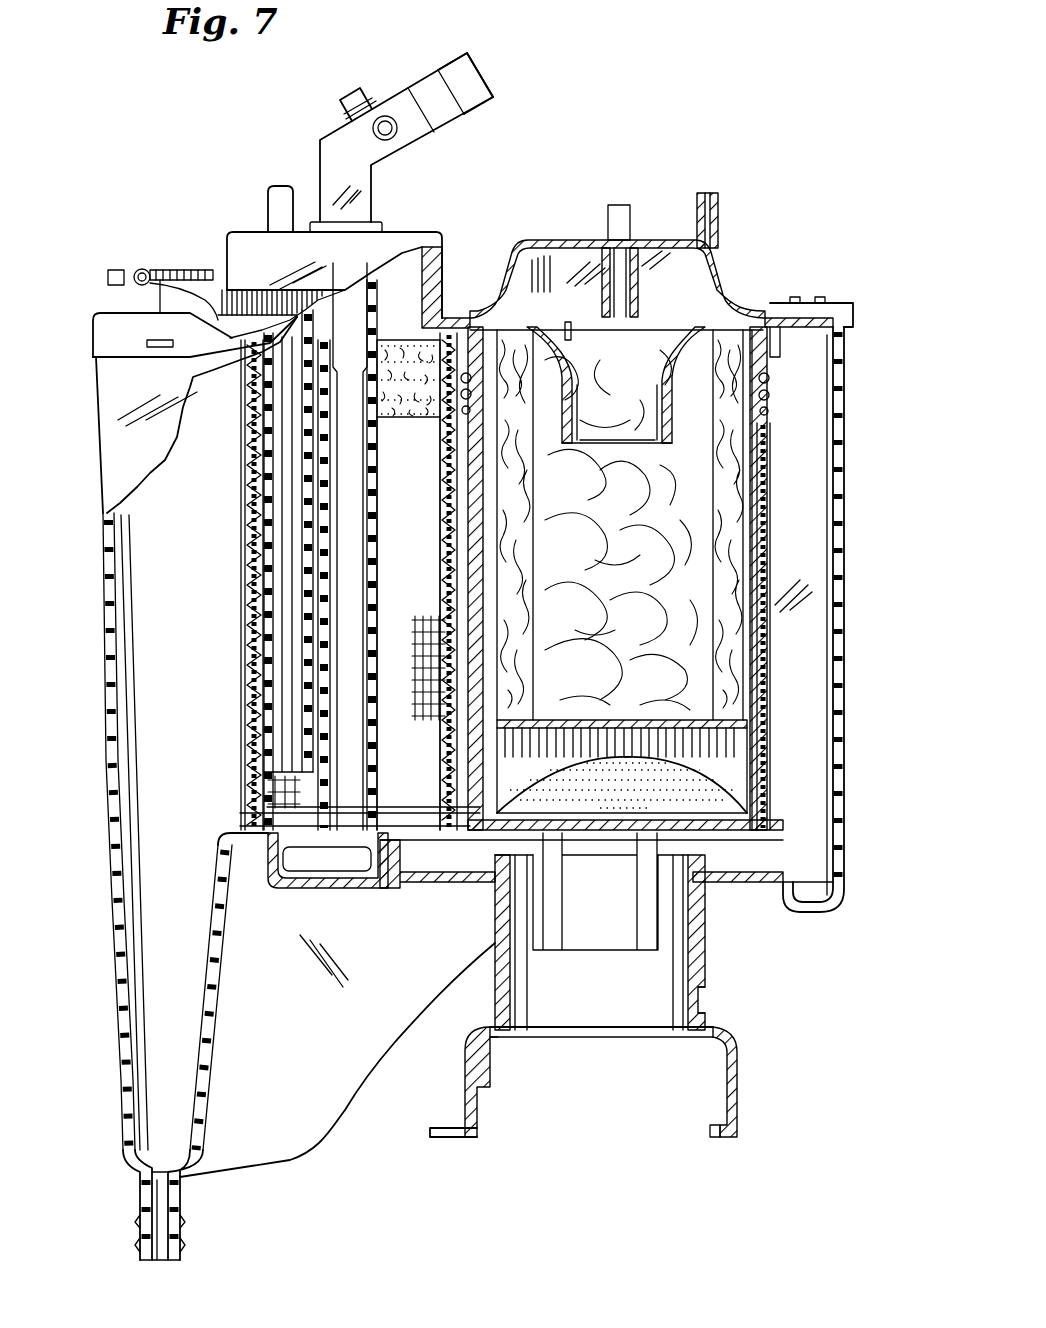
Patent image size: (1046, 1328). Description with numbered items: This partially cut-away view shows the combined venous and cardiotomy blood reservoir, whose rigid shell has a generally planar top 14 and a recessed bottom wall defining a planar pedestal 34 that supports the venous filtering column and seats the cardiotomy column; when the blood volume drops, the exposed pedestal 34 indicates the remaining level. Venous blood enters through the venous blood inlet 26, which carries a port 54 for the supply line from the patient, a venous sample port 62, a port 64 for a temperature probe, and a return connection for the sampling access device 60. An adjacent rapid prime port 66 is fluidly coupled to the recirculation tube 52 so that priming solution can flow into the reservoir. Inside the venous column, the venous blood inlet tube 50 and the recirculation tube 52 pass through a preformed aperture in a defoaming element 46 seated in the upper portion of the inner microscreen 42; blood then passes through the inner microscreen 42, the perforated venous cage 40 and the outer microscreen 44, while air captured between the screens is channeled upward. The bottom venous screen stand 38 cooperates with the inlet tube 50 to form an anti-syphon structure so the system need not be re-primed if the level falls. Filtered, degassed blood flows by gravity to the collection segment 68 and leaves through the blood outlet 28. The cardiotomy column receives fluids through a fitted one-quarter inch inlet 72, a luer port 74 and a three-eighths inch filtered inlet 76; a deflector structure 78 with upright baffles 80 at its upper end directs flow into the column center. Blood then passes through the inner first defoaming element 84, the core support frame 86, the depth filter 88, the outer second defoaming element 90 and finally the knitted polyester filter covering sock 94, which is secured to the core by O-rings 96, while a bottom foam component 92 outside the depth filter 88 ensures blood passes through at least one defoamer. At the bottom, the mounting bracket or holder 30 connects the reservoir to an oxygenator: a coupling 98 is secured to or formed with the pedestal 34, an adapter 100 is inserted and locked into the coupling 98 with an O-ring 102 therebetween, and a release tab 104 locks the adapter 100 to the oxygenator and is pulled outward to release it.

The top 14 is at (832, 303).
The venous blood inlet 26 is at (422, 116).
The blood outlet 28 is at (182, 1250).
The mounting bracket or holder 30 is at (597, 1006).
The pedestal 34 is at (800, 906).
The bottom venous screen stand 38 is at (296, 878).
The perforated venous cage 40 is at (248, 585).
The inner microscreen 42 is at (446, 610).
The outer microscreen 44 is at (244, 643).
The defoaming element 46 is at (415, 418).
The venous blood inlet tube 50 is at (378, 504).
The recirculation tube 52 is at (256, 546).
The port 54 is at (480, 73).
The sampling access device 60 is at (133, 240).
The venous sample port 62 is at (356, 84).
The port for a temperature probe 64 is at (397, 137).
The rapid prime port 66 is at (272, 185).
The collection segment 68 is at (163, 988).
The fitted one-quarter inch inlet 72 is at (718, 198).
The luer port 74 is at (610, 212).
The three-eighths inch filtered inlet 76 is at (640, 275).
The deflector structure 78 is at (655, 435).
The upright baffles 80 is at (572, 331).
The inner first defoaming element 84 is at (530, 494).
The core support frame 86 is at (495, 522).
The depth filter 88 is at (488, 556).
The outer second defoaming element 90 is at (772, 544).
The bottom foam component 92 is at (742, 806).
The filter covering sock 94 is at (772, 582).
The O-ring 96 is at (772, 402).
The coupling 98 is at (708, 952).
The adapter 100 is at (738, 1060).
The O-ring 102 is at (706, 1012).
The release tab 104 is at (446, 1140).